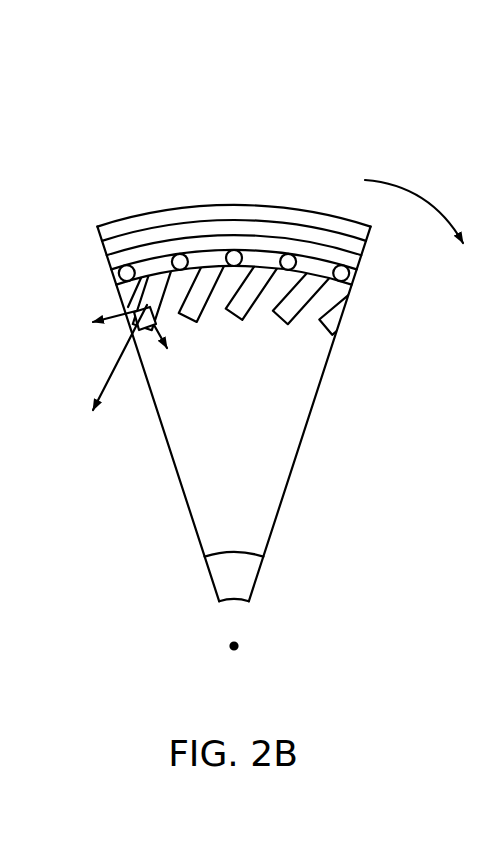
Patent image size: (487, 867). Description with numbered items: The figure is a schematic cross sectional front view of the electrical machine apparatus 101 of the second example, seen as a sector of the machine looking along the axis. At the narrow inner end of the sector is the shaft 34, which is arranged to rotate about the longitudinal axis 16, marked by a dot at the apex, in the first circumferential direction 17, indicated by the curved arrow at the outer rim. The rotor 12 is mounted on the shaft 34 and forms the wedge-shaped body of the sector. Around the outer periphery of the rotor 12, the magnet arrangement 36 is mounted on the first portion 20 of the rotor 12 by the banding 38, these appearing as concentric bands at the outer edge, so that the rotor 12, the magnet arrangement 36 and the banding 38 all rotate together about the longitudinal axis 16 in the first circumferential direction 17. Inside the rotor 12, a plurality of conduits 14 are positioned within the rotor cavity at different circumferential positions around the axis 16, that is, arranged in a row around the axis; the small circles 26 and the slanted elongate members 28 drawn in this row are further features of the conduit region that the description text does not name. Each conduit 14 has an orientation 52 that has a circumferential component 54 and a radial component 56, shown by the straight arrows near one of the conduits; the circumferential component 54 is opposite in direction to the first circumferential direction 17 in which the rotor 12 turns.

The electrical machine apparatus 101 is at (322, 146).
The rotor 12 is at (360, 398).
The conduit 14 is at (160, 292).
The longitudinal axis 16 is at (238, 647).
The first circumferential direction 17 is at (407, 188).
The first portion 20 is at (117, 260).
The pivot pins 26 is at (181, 256).
The blades 28 is at (149, 336).
The shaft 34 is at (233, 590).
The magnet arrangement 36 is at (110, 245).
The banding 38 is at (106, 231).
The orientation 52 is at (125, 385).
The circumferential component 54 is at (117, 320).
The radial component 56 is at (170, 340).